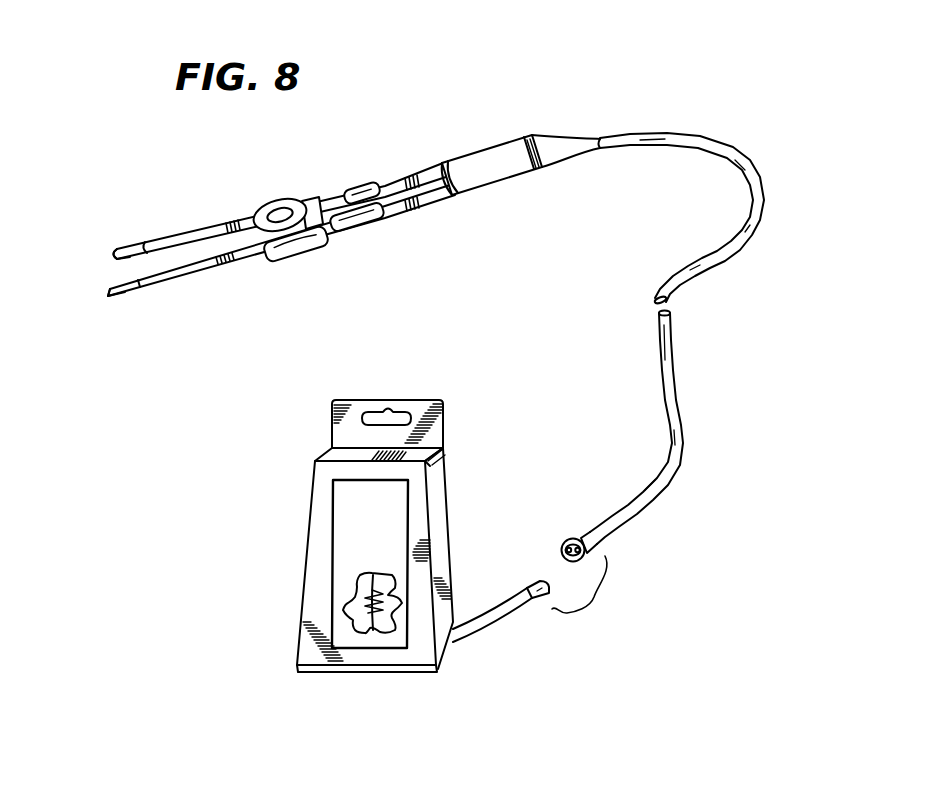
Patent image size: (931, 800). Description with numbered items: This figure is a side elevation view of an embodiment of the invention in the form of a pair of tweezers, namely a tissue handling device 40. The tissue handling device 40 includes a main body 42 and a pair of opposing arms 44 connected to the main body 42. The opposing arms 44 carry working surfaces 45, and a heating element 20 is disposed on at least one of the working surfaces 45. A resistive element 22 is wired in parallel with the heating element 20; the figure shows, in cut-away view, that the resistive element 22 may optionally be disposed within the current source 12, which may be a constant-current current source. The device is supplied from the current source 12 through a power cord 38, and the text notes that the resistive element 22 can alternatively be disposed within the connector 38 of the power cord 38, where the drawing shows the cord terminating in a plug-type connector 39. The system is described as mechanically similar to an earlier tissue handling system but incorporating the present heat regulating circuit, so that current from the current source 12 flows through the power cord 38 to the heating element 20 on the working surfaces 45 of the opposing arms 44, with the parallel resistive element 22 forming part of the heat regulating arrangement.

The current source 12 is at (352, 553).
The heating element 20 is at (138, 258).
The resistive element 22 is at (380, 593).
The power cord 38 is at (674, 375).
The connector 39 is at (570, 540).
The tissue handling device 40 is at (611, 106).
The main body 42 is at (483, 150).
The opposing arms 44 is at (172, 236).
The working surfaces 45 is at (108, 265).